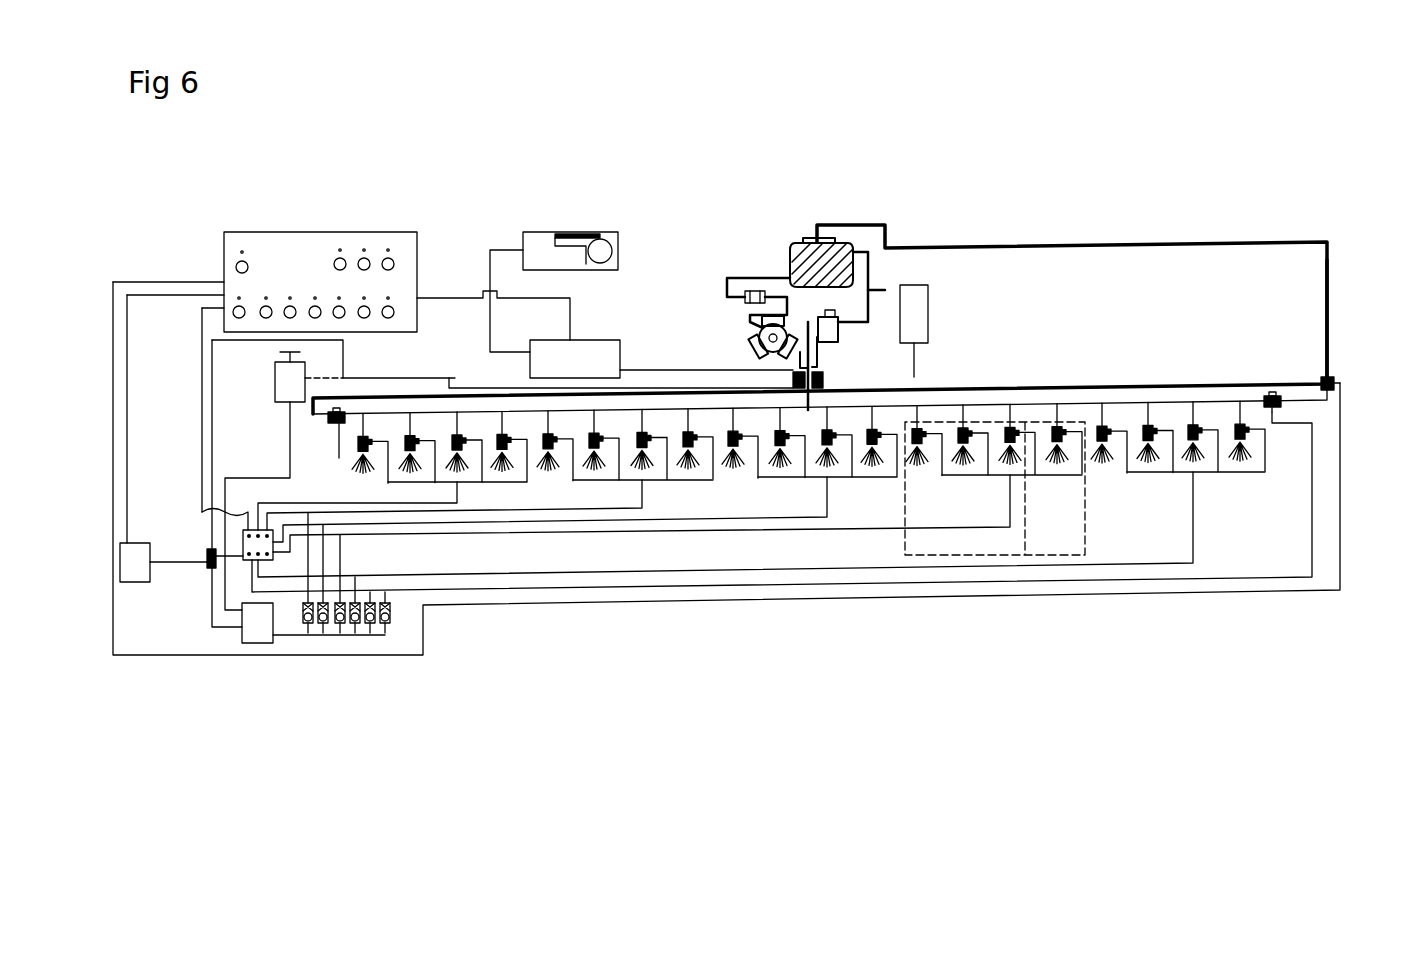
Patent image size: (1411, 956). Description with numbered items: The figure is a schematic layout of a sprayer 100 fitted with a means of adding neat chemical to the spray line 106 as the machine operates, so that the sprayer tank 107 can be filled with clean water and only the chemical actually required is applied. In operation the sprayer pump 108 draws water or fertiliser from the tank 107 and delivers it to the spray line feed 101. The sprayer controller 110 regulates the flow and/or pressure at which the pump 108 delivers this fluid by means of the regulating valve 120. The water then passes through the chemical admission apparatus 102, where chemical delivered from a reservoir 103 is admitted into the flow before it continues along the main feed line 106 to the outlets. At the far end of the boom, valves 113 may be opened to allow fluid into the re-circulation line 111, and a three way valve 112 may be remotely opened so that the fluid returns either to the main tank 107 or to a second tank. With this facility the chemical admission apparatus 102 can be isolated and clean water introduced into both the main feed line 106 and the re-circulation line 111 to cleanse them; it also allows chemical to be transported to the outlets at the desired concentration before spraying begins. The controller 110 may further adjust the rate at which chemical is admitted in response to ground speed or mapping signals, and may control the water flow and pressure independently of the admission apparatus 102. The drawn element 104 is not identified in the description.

The sprayer 100 is at (851, 173).
The spray line feed 101 is at (842, 327).
The chemical admission apparatus 102 is at (828, 373).
The reservoir 103 is at (918, 298).
The sensor unit 104 is at (922, 372).
The spray line 106 is at (660, 394).
The sprayer tank 107 is at (839, 254).
The sprayer pump 108 is at (758, 328).
The sprayer controller 110 is at (301, 248).
The re-circulation line 111 is at (1260, 373).
The three way valve 112 is at (1333, 372).
The valves 113 is at (331, 427).
The regulating valve 120 is at (868, 288).